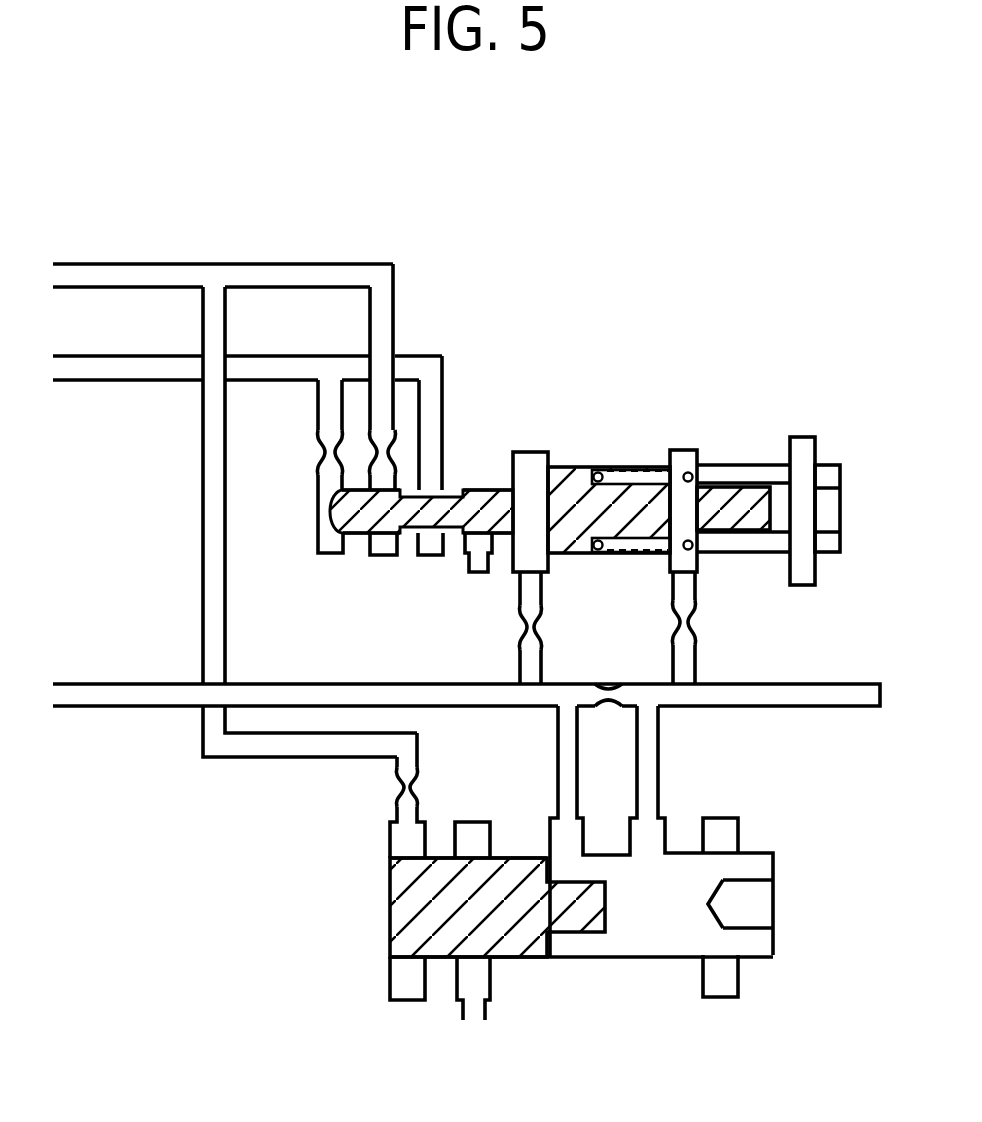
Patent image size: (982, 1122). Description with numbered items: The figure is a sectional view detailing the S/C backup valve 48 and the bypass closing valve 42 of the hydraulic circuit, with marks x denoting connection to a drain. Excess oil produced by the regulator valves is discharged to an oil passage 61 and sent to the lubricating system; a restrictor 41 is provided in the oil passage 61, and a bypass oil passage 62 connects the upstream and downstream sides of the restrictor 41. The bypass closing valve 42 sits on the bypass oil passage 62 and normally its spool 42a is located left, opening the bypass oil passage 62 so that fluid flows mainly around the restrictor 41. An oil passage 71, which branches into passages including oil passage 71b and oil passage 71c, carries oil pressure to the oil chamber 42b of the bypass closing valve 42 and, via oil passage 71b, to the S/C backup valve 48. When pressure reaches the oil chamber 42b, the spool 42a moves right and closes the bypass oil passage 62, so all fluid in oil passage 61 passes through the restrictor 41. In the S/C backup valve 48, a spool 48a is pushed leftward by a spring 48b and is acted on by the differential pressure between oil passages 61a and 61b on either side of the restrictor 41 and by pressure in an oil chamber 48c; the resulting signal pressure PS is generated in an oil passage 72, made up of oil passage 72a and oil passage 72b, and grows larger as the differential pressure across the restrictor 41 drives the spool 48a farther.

The oil passage 71 is at (162, 264).
The oil passage 71b is at (393, 277).
The branch passage 71c is at (203, 548).
The oil passage 72 is at (300, 356).
The oil passage 72a is at (443, 415).
The oil passage 72b is at (318, 397).
The S/C backup valve 48 is at (624, 340).
The spool 48a is at (567, 470).
The spring 48b is at (712, 472).
The oil chamber 48c is at (330, 550).
The oil passage 61 is at (812, 699).
The oil passage 61a is at (683, 656).
The oil passage 61b is at (520, 652).
The restrictor 41 is at (608, 683).
The bypass oil passage 62 is at (650, 745).
The bypass closing valve 42 is at (686, 1000).
The spool 42a is at (392, 906).
The oil chamber 42b is at (395, 850).